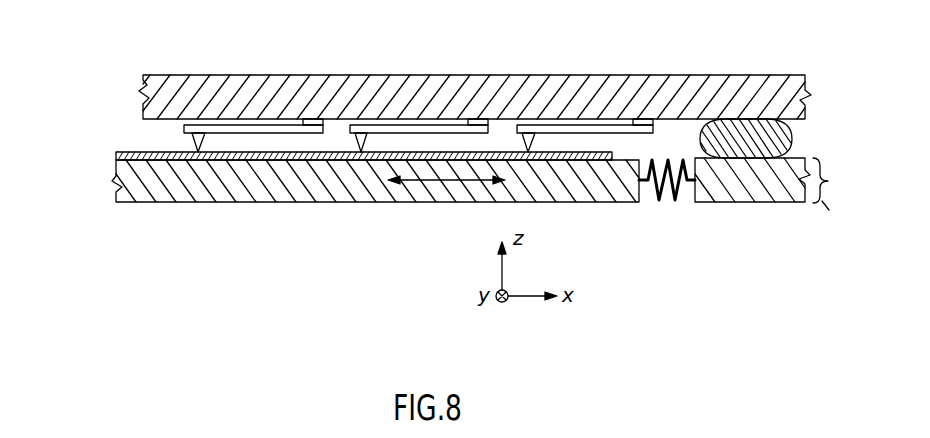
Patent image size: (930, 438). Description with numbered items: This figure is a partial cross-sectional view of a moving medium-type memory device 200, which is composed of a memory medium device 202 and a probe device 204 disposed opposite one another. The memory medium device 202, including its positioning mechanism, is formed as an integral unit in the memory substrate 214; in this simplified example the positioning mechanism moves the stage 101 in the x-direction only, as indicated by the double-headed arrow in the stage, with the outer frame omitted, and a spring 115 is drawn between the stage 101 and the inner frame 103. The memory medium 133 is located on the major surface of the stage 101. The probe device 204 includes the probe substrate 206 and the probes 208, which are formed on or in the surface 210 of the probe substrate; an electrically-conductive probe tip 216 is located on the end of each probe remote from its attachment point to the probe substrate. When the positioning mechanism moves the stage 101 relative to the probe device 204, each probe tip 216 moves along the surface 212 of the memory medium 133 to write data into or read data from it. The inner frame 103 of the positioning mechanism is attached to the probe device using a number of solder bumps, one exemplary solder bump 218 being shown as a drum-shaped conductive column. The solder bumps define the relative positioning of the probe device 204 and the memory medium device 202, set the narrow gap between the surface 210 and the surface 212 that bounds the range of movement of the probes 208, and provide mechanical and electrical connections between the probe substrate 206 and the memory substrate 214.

The probe device 204 is at (355, 75).
The probe substrate 206 is at (589, 93).
The probes 208 is at (232, 125).
The surface of the memory medium 212 is at (506, 150).
The electrically-conductive probe tip 216 is at (190, 143).
The memory medium 133 is at (178, 158).
The memory substrate 214 is at (116, 201).
The stage 101 is at (260, 180).
The surface of the probe substrate 210 is at (342, 183).
The spring 115 is at (660, 202).
The inner frame 103 is at (762, 178).
The solder bump 218 is at (793, 138).
The memory medium device 202 is at (825, 198).
The moving medium-type memory device 200 is at (722, 246).